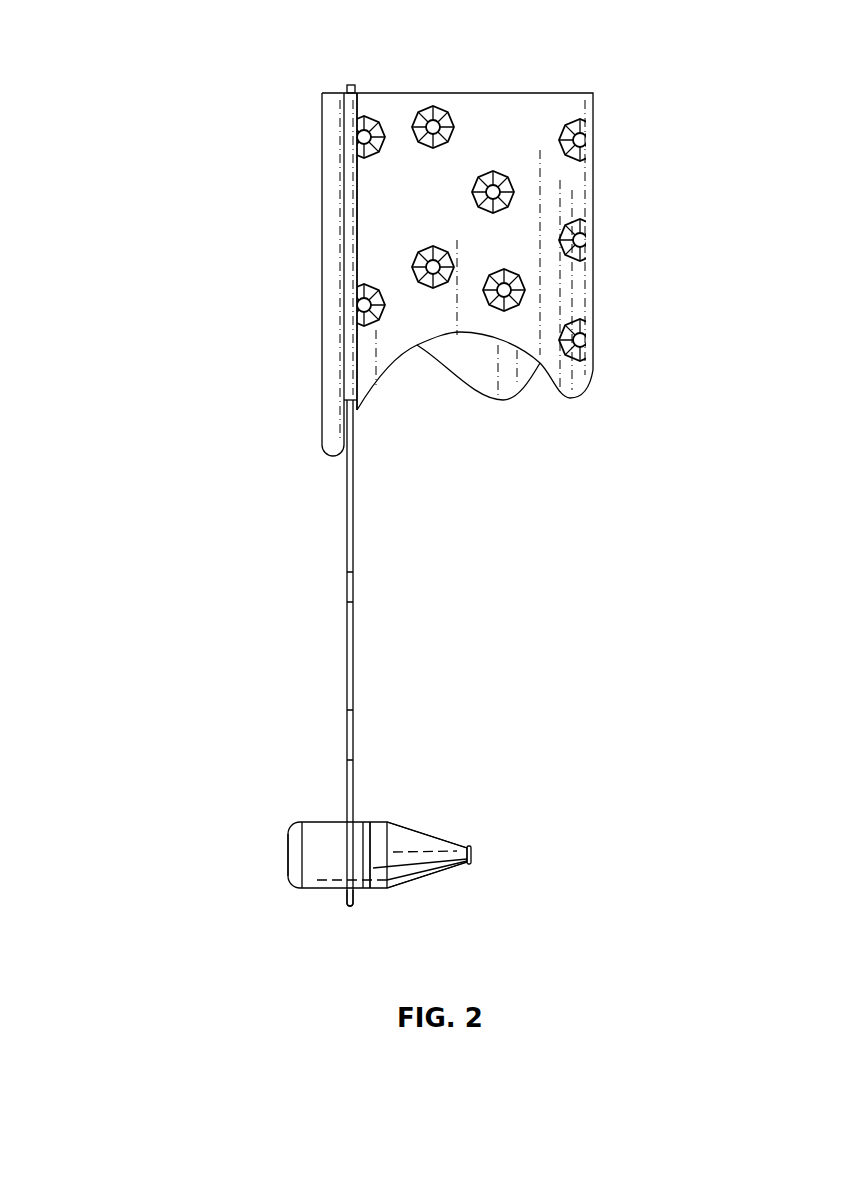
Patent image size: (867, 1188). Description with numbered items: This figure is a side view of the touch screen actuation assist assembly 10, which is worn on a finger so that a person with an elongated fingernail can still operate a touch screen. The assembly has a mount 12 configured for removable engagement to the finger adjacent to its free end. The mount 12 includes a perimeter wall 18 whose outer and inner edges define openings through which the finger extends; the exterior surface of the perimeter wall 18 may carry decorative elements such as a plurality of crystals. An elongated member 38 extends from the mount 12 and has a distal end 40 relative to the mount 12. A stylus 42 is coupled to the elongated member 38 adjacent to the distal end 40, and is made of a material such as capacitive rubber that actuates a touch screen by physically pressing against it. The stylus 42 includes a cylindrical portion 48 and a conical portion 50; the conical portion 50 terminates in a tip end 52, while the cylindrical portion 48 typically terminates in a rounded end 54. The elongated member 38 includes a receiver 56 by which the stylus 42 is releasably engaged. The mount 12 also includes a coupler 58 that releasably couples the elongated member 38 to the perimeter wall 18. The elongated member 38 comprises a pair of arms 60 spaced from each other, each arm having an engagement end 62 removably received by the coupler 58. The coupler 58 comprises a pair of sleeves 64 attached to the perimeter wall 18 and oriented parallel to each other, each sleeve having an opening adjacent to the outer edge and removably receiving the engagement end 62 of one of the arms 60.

The touch screen actuation assist assembly 10 is at (150, 42).
The mount 12 is at (657, 197).
The perimeter wall 18 is at (567, 183).
The elongated member 38 is at (372, 645).
The distal end 40 is at (352, 907).
The stylus 42 is at (378, 877).
The cylindrical portion 48 is at (320, 895).
The conical portion 50 is at (413, 892).
The tip end 52 is at (470, 855).
The rounded end 54 is at (288, 858).
The receiver 56 is at (363, 815).
The coupler 58 is at (340, 257).
The arms 60 is at (347, 582).
The engagement end 62 is at (352, 85).
The sleeves 64 is at (345, 187).